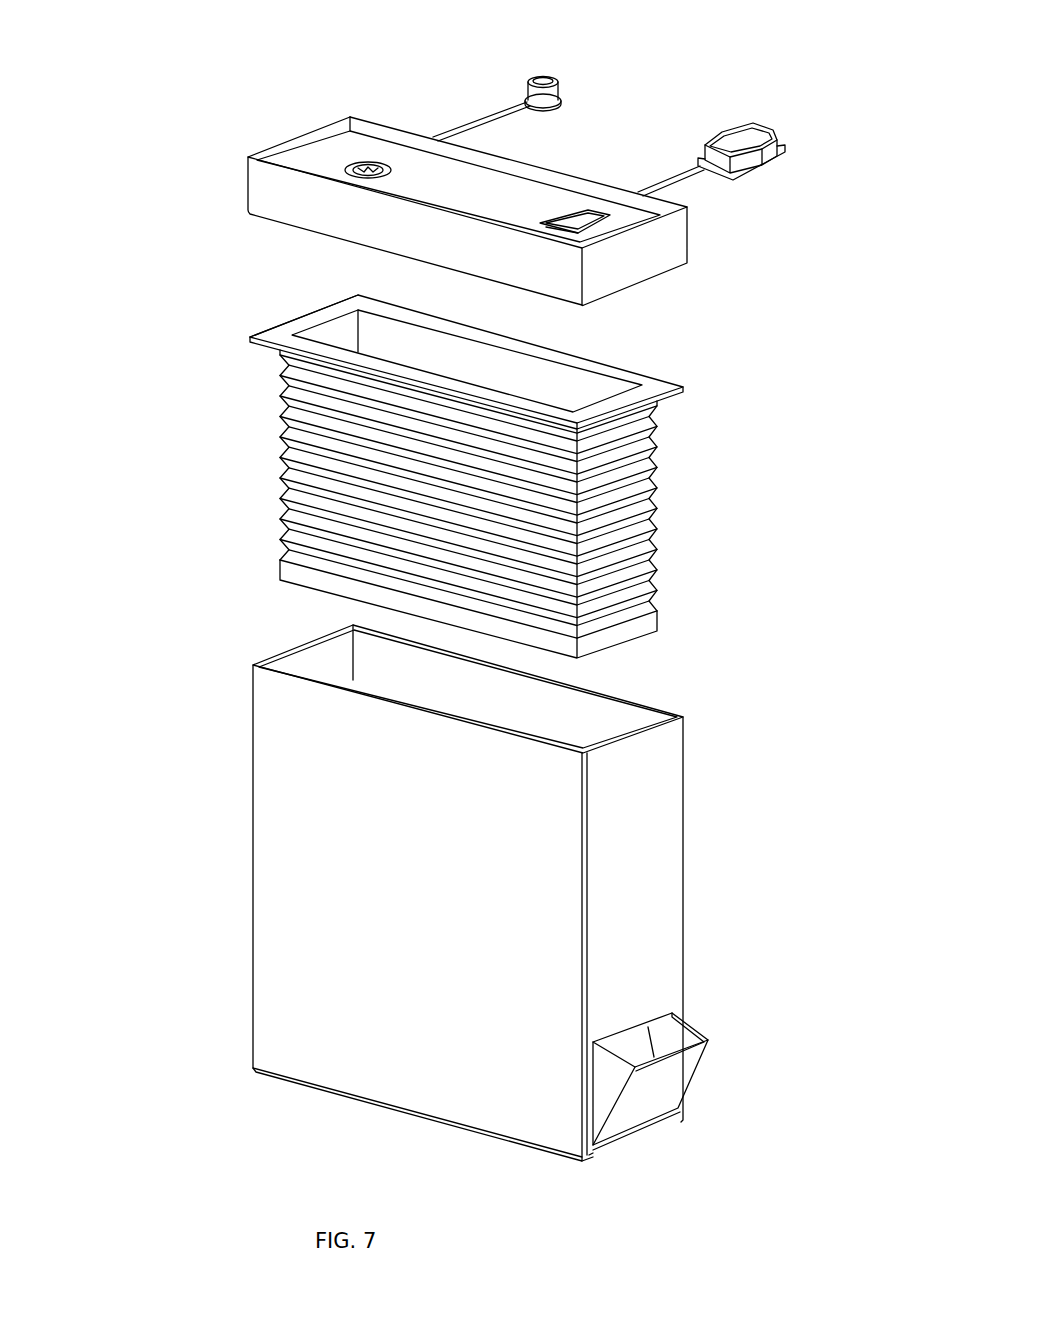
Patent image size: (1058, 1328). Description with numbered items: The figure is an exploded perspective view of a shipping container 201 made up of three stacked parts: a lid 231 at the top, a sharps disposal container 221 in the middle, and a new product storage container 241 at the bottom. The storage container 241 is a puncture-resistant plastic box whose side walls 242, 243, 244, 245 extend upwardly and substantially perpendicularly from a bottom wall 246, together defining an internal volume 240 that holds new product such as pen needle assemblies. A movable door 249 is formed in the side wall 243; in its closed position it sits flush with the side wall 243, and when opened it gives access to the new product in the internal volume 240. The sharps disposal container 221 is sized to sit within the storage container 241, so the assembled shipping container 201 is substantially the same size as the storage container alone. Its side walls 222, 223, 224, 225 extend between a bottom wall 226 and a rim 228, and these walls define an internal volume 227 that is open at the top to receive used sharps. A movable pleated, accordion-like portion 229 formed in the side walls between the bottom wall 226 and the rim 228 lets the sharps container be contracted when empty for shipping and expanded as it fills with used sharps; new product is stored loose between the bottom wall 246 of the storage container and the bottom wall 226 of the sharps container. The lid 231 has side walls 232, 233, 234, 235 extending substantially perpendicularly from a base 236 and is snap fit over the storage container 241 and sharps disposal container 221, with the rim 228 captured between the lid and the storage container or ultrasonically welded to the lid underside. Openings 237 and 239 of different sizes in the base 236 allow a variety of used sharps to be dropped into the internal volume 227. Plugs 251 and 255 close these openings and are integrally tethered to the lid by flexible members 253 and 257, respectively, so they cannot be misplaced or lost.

The shipping container 201 is at (175, 583).
The sharps disposal container 221 is at (675, 375).
The side wall 222 is at (283, 466).
The side wall 223 is at (652, 545).
The side wall 224 is at (393, 333).
The side wall 225 is at (283, 402).
The bottom wall 226 is at (298, 585).
The internal volume 227 is at (563, 380).
The rim 228 is at (270, 327).
The movable pleated portion 229 is at (660, 482).
The lid 231 is at (247, 177).
The side wall 232 is at (262, 218).
The side wall 233 is at (672, 258).
The side wall 234 is at (550, 167).
The side wall 235 is at (267, 145).
The base 236 is at (413, 170).
The opening 237 is at (353, 163).
The opening 239 is at (607, 234).
The internal volume 240 is at (583, 707).
The new product storage container 241 is at (683, 875).
The side wall 242 is at (277, 1015).
The side wall 243 is at (673, 943).
The side wall 244 is at (643, 717).
The side wall 245 is at (308, 657).
The bottom wall 246 is at (538, 1150).
The movable door 249 is at (697, 1068).
The plug 251 is at (560, 90).
The flexible member 253 is at (487, 110).
The plug 255 is at (775, 133).
The flexible member 257 is at (703, 178).